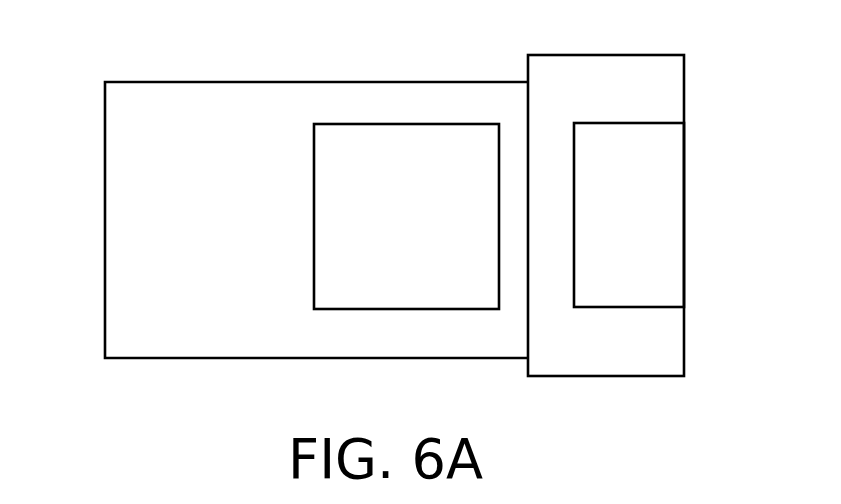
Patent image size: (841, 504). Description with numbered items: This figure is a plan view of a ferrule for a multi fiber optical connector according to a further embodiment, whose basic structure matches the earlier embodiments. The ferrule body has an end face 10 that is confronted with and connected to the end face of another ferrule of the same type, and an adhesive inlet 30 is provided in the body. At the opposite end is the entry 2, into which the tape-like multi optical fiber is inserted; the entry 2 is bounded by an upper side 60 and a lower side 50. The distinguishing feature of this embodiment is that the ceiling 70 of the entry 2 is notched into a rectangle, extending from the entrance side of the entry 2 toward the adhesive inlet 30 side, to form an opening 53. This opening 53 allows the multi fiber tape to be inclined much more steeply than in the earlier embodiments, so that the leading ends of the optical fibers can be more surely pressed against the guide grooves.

The end face 10 is at (105, 250).
The adhesive inlet 30 is at (424, 142).
The lower side 50 is at (684, 258).
The entry 2 is at (667, 224).
The upper side 60 is at (575, 176).
The opening 53 is at (669, 147).
The ceiling 70 is at (557, 275).